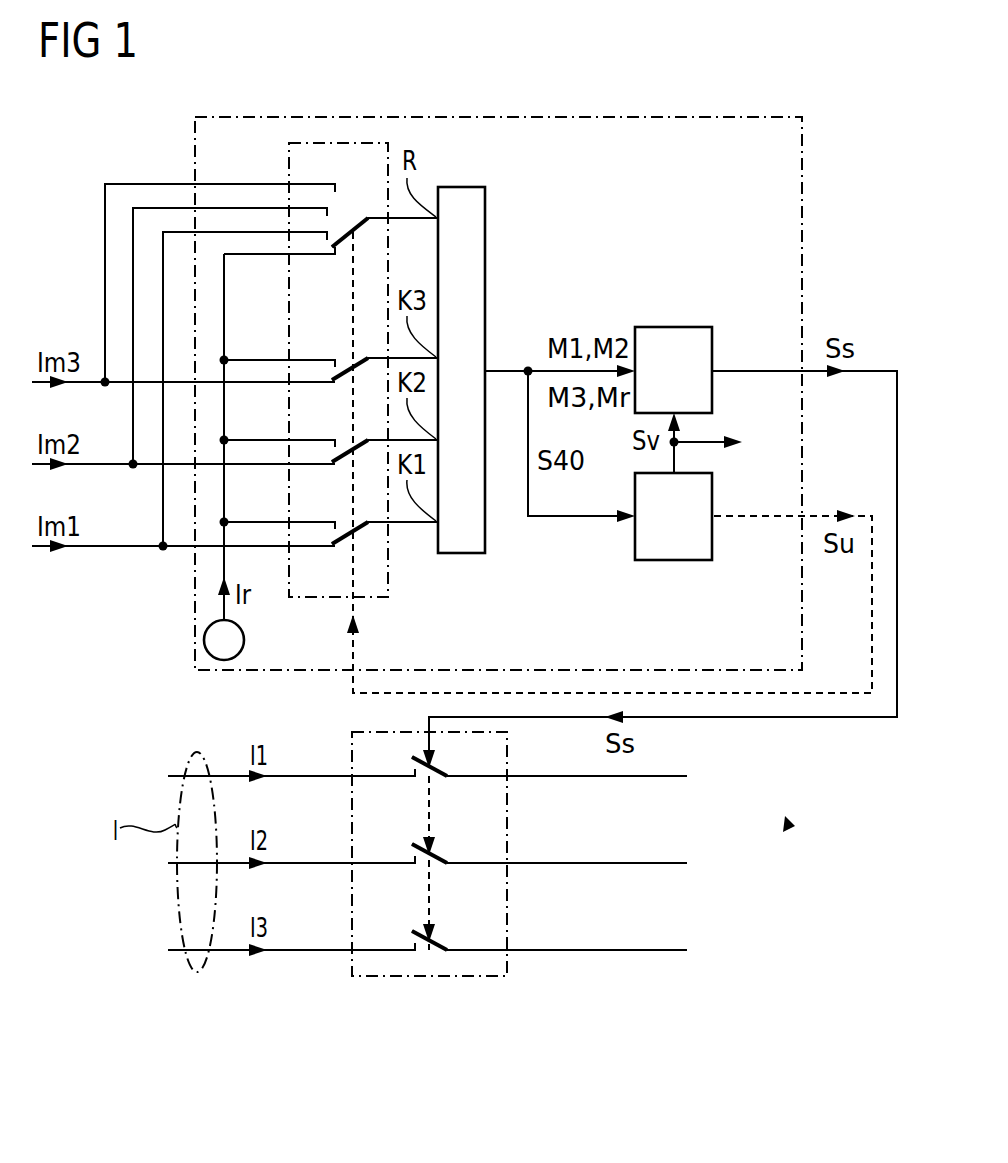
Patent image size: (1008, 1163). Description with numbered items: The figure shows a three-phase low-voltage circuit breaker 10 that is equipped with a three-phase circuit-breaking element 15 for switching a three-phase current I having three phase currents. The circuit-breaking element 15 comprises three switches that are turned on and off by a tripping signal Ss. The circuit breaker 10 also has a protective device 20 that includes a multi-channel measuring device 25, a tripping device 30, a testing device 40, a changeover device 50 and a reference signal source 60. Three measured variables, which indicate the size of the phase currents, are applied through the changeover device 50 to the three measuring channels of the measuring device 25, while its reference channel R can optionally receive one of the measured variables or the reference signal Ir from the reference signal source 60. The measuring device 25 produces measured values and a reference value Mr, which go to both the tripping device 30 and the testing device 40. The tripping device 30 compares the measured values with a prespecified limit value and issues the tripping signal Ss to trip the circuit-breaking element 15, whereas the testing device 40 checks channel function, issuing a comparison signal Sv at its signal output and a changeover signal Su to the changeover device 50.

The three-phase low-voltage circuit breaker 10 is at (787, 822).
The three-phase circuit-breaking element 15 is at (507, 825).
The protective device 20 is at (802, 192).
The multi-channel measuring device 25 is at (485, 230).
The tripping device 30 is at (670, 327).
The testing device 40 is at (670, 560).
The changeover device 50 is at (388, 582).
The reference signal source 60 is at (204, 640).